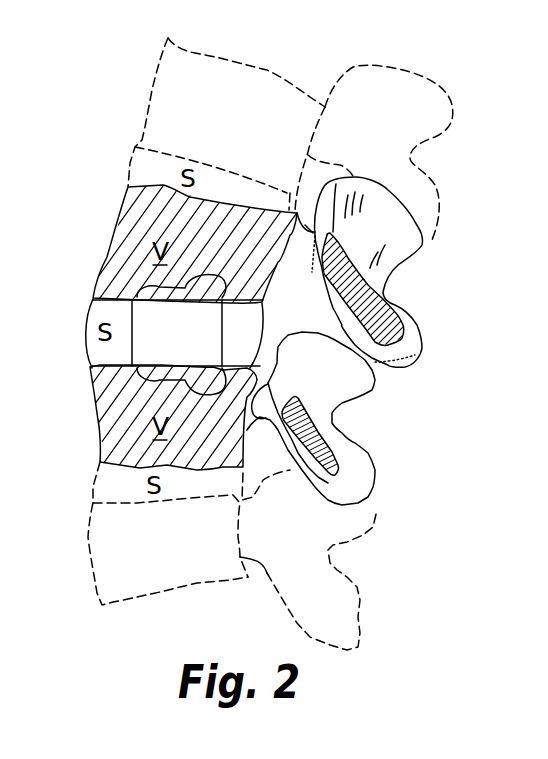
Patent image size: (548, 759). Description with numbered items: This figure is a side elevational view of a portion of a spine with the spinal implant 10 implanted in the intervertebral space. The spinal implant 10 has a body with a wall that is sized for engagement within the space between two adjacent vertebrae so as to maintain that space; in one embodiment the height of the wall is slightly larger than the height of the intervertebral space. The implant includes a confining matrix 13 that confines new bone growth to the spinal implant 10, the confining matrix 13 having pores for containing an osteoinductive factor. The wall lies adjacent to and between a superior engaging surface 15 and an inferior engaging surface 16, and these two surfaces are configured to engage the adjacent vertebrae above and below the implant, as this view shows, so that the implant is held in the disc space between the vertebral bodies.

The spinal implant 10 is at (93, 395).
The confining matrix 13 is at (147, 310).
The superior engaging surface 15 is at (262, 306).
The inferior engaging surface 16 is at (240, 390).